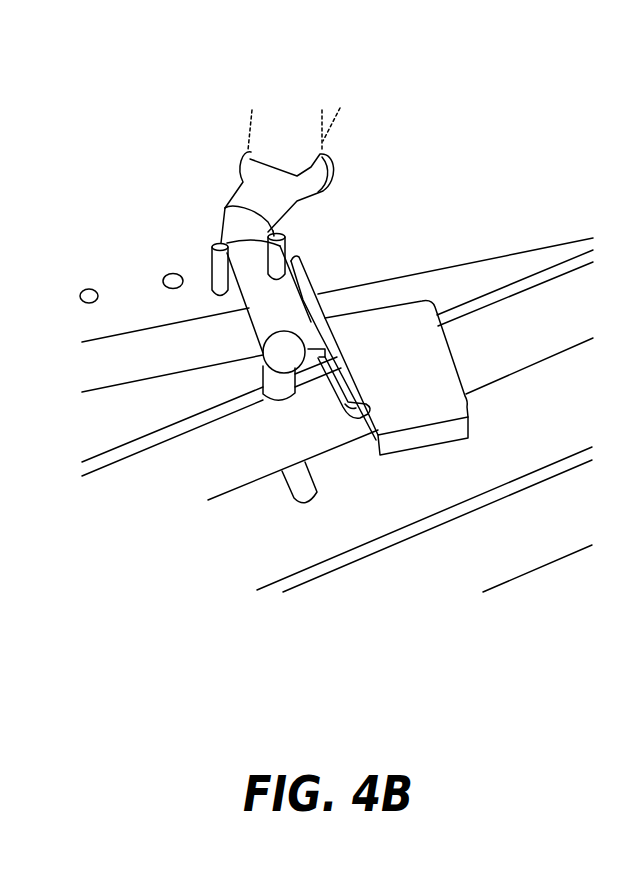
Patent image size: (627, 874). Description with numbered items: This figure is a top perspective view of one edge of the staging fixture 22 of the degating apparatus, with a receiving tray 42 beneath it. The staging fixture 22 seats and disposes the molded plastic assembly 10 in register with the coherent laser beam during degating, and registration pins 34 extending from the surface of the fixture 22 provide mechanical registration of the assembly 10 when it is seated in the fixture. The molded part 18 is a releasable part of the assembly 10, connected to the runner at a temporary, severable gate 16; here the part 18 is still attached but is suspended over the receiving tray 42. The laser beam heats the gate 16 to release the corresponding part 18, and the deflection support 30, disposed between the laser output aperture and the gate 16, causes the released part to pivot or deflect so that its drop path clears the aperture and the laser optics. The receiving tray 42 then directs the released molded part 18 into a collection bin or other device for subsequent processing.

The molded plastic assembly 10 is at (253, 122).
The registration pins 34 is at (281, 238).
The deflection support 30 is at (298, 267).
The receiving tray 42 is at (572, 314).
The molded part 18 is at (412, 385).
The gate 16 is at (315, 352).
The staging fixture 22 is at (97, 312).